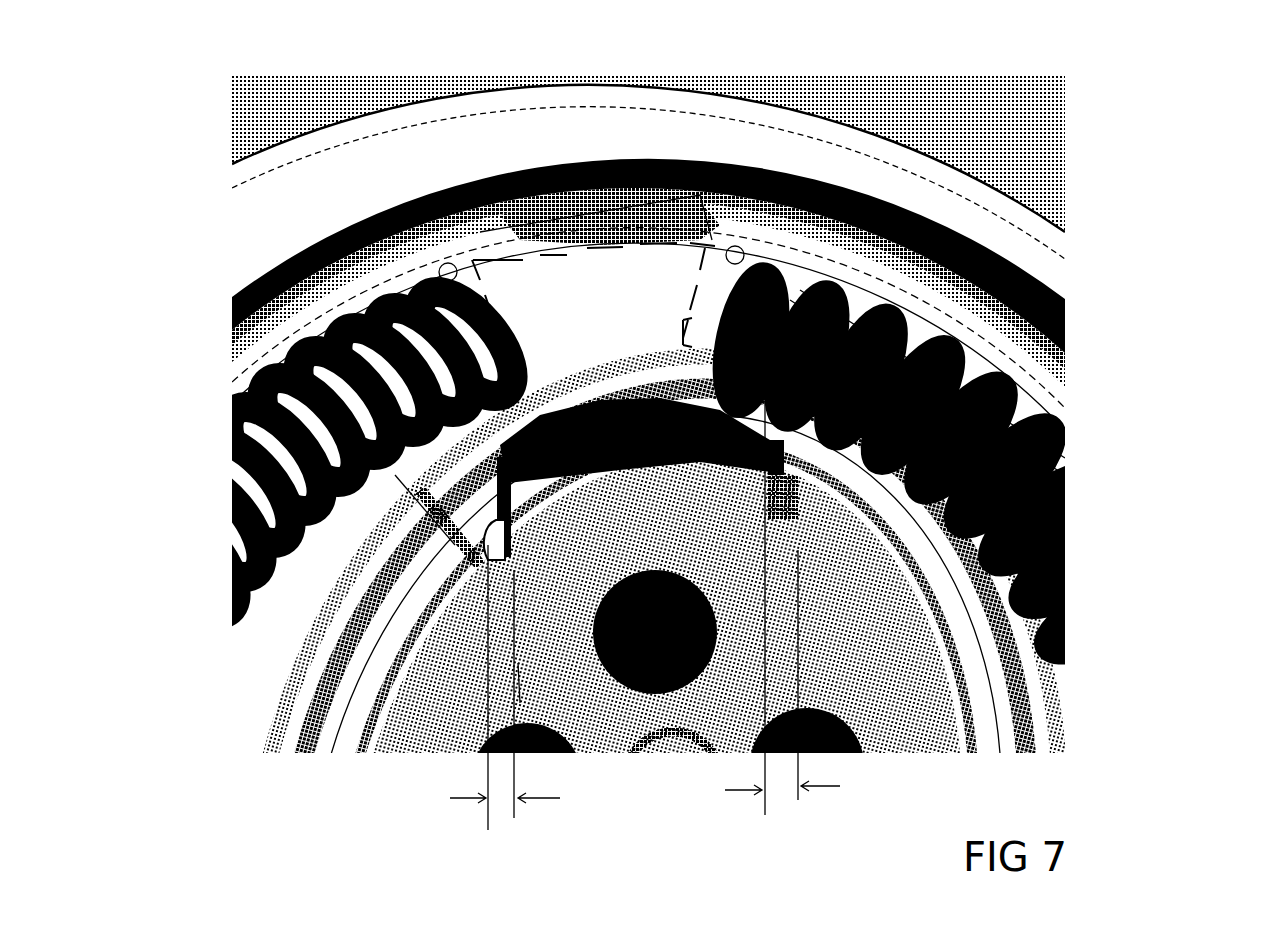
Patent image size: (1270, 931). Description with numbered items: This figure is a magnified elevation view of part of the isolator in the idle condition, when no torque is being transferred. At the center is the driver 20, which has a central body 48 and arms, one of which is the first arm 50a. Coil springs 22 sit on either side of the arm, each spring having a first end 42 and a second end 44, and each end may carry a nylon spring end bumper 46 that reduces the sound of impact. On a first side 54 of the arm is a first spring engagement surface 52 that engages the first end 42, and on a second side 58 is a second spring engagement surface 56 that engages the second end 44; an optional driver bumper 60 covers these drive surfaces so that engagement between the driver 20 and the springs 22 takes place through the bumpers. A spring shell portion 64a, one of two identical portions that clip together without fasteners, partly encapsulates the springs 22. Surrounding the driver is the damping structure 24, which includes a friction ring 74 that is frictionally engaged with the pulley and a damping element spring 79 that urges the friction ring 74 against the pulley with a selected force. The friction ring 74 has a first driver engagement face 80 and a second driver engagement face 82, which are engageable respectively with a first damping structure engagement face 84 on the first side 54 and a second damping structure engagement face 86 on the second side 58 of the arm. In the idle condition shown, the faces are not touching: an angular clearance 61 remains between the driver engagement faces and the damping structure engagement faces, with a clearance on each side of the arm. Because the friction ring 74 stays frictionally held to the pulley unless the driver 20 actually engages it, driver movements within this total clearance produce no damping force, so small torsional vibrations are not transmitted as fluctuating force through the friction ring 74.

The driver 20 is at (883, 620).
The springs 22 is at (290, 362).
The damping structure 24 is at (873, 558).
The first end 42 is at (733, 410).
The second end 44 is at (450, 400).
The spring end bumper 46 is at (448, 270).
The central body 48 is at (917, 688).
The first arm 50a is at (362, 225).
The first spring engagement surface 52 is at (800, 300).
The first side 54 is at (683, 333).
The second spring engagement surface 56 is at (387, 290).
The second side 58 is at (430, 292).
The driver bumper 60 is at (663, 297).
The angular clearance 61 is at (802, 607).
The spring shell portion 64a is at (963, 310).
The friction ring 74 is at (853, 527).
The damping element spring 79 is at (307, 727).
The first driver engagement face 80 is at (768, 492).
The second driver engagement face 82 is at (490, 493).
The first damping structure engagement face 84 is at (768, 503).
The second damping structure engagement face 86 is at (493, 527).